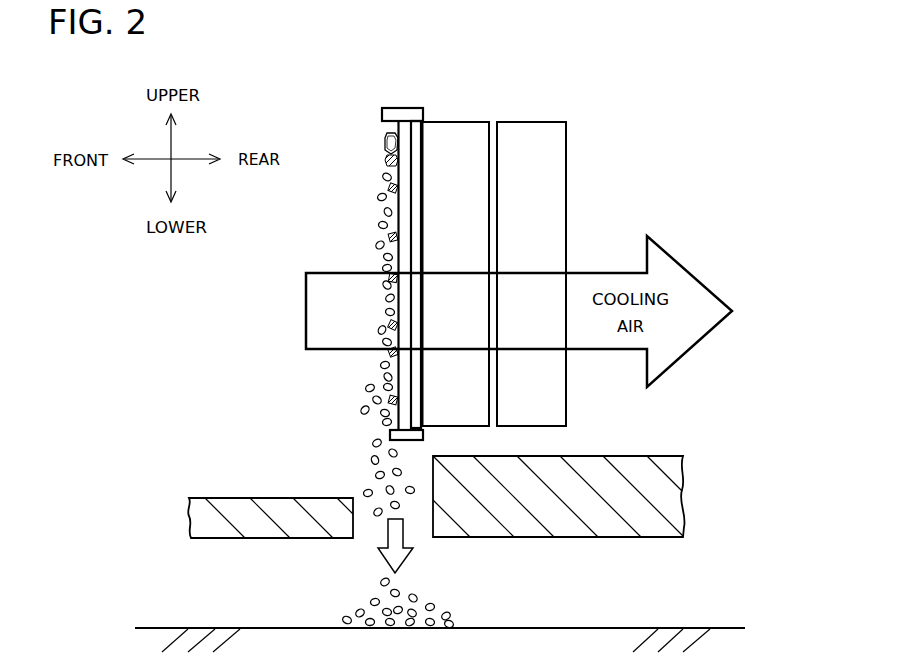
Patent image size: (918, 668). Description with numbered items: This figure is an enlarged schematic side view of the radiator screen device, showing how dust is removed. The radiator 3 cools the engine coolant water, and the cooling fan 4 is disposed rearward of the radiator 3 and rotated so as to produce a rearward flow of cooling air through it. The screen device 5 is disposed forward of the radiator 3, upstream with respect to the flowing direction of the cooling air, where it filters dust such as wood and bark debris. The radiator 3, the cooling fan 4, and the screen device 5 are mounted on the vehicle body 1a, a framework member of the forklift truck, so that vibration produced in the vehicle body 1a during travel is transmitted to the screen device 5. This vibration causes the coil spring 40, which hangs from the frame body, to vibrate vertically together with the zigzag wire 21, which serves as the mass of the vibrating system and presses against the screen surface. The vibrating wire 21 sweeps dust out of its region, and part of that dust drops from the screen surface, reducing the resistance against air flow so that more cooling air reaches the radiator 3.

The screen device 5 is at (388, 96).
The radiator 3 is at (472, 122).
The cooling fan 4 is at (549, 122).
The coil spring 40 is at (384, 142).
The wire 21 is at (389, 188).
The vehicle body 1a is at (237, 510).